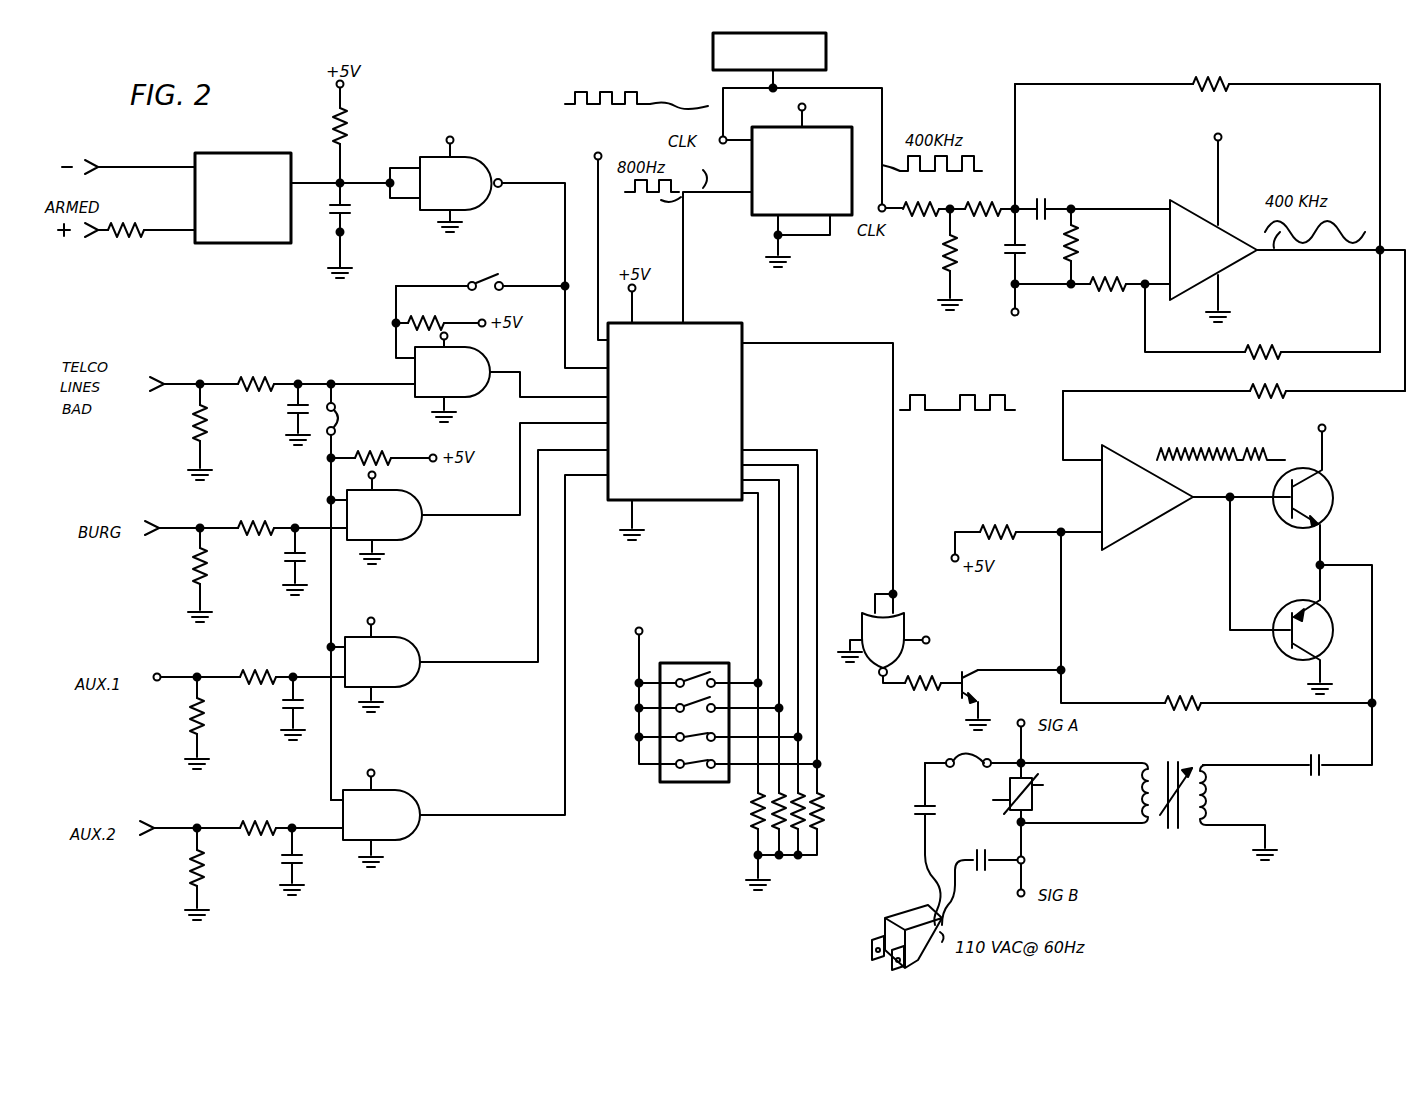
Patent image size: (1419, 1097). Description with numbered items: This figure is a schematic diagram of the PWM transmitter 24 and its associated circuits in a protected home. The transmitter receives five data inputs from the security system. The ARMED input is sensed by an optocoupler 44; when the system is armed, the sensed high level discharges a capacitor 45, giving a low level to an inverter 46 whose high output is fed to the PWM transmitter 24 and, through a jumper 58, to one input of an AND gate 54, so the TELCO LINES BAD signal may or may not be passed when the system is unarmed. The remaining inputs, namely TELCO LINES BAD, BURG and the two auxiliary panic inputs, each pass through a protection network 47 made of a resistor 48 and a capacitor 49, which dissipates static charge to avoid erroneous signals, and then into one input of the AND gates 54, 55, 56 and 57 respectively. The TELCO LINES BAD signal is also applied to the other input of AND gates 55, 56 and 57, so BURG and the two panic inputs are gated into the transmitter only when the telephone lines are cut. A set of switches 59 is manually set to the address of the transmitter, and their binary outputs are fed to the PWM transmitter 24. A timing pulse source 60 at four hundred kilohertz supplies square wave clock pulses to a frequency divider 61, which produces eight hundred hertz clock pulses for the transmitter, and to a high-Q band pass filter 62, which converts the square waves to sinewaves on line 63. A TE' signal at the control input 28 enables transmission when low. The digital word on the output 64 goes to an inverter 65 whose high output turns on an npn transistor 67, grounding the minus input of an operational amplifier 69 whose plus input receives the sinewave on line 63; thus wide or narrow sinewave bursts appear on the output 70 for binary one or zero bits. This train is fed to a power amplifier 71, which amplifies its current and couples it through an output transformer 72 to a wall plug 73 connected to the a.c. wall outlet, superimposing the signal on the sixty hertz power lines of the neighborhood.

The PWM transmitter 24 is at (662, 489).
The control input 28 is at (597, 231).
The optocoupler 44 is at (250, 140).
The capacitor 45 is at (352, 209).
The inverter 46 is at (470, 168).
The protection network 47 is at (290, 389).
The resistor 48 is at (277, 370).
The capacitor 49 is at (292, 413).
The AND gate 54 is at (467, 383).
The AND gate 55 is at (398, 528).
The AND gate 56 is at (395, 675).
The AND gate 57 is at (387, 808).
The jumper 58 is at (485, 280).
The set of switches 59 is at (716, 645).
The timing pulse source 60 is at (828, 53).
The frequency divider 61 is at (833, 128).
The band pass filter 62 is at (1203, 195).
The line 63 is at (1298, 392).
The output 64 is at (764, 342).
The inverter 65 is at (887, 632).
The npn transistor 67 is at (973, 670).
The operational amplifier 69 is at (1138, 517).
The output 70 is at (1203, 470).
The power amplifier 71 is at (1284, 604).
The output transformer 72 is at (1172, 832).
The wall plug 73 is at (886, 915).